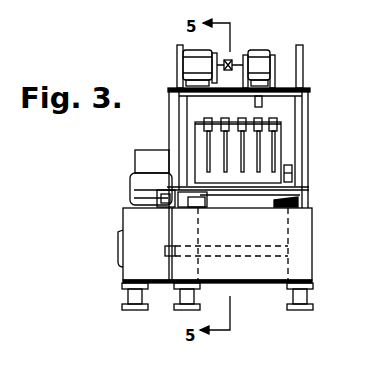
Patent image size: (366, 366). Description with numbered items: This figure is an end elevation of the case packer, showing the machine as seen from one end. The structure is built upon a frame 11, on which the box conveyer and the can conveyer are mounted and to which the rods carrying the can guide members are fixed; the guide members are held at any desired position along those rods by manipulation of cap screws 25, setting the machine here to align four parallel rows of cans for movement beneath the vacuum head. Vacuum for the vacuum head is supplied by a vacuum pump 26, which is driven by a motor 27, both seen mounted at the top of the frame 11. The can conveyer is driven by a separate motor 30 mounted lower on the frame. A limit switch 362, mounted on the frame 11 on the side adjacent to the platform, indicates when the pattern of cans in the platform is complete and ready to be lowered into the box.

The frame 11 is at (314, 242).
The cap screws 25 is at (272, 116).
The vacuum pump 26 is at (259, 62).
The motor 27 is at (195, 50).
The motor 30 is at (147, 175).
The limit switch 362 is at (293, 172).